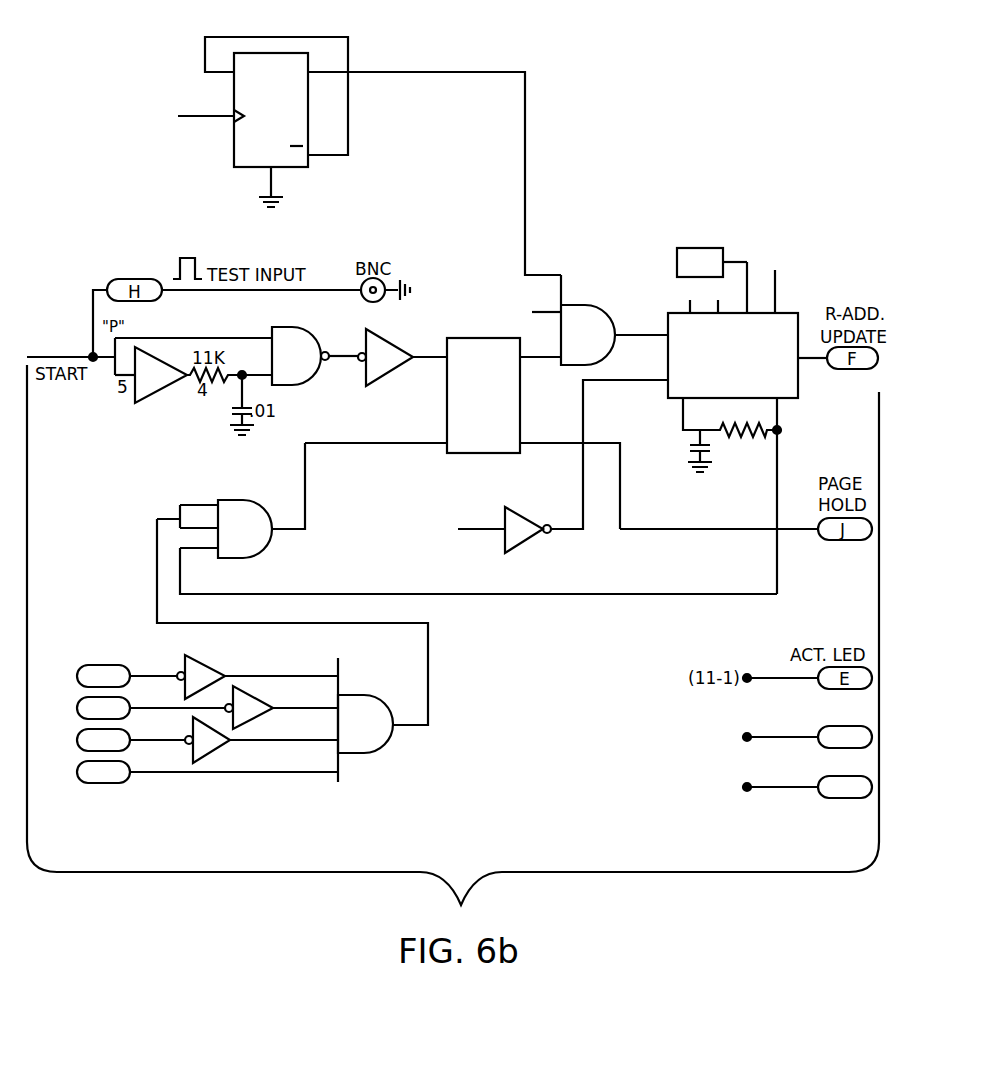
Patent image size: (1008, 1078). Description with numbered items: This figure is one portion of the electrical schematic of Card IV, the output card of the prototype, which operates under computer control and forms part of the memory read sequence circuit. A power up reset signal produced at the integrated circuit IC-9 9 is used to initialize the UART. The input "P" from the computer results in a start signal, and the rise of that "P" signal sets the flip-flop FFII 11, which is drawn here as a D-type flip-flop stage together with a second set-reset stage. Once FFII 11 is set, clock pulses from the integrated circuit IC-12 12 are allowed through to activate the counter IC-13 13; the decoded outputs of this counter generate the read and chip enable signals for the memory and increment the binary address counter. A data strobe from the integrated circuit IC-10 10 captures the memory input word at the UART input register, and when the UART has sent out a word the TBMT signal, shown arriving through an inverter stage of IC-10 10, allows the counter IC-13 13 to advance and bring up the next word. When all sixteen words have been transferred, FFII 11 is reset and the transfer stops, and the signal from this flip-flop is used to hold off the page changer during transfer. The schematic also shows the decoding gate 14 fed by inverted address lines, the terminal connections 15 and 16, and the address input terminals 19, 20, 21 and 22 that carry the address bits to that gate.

The IC- 9 is at (244, 507).
The IC- 10 is at (403, 546).
The FFII 11 is at (367, 283).
The IC- 12 is at (467, 423).
The counter IC- 13 is at (756, 421).
The AND gate IC 14 is at (279, 650).
The connector terminal 15 is at (771, 498).
The connector terminal 16 is at (771, 787).
The address input A0 terminal 19 is at (87, 774).
The address input A1 terminal 20 is at (114, 742).
The address input A5 terminal 21 is at (134, 710).
The address input A6 terminal 22 is at (110, 678).